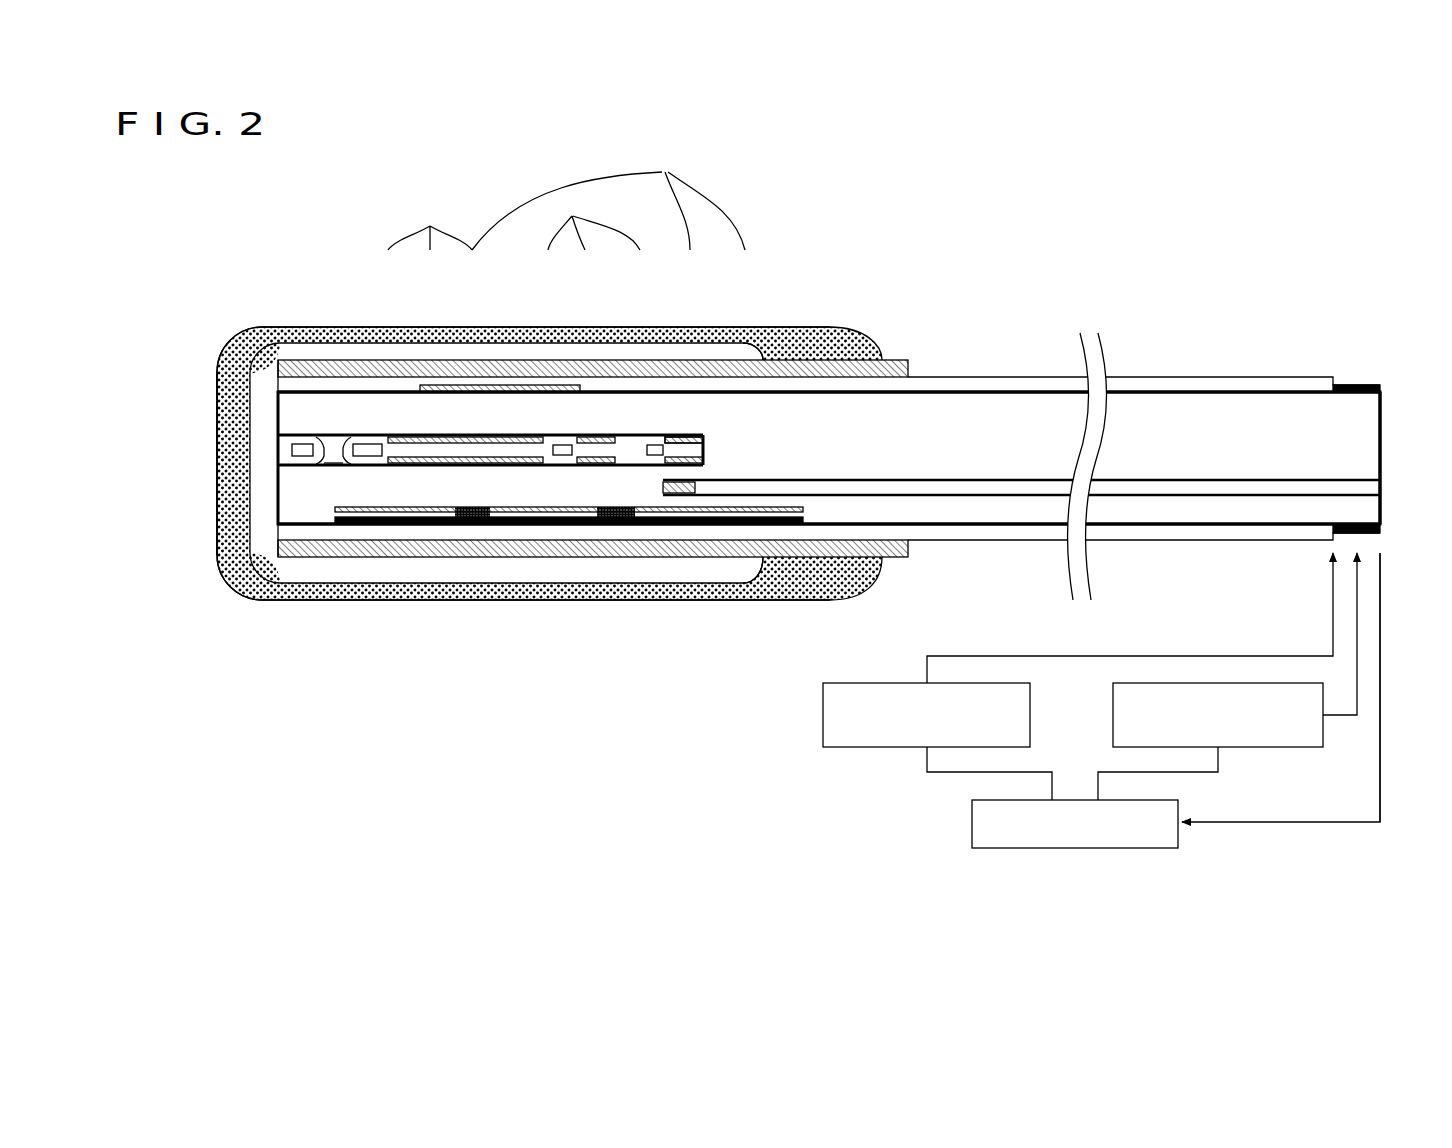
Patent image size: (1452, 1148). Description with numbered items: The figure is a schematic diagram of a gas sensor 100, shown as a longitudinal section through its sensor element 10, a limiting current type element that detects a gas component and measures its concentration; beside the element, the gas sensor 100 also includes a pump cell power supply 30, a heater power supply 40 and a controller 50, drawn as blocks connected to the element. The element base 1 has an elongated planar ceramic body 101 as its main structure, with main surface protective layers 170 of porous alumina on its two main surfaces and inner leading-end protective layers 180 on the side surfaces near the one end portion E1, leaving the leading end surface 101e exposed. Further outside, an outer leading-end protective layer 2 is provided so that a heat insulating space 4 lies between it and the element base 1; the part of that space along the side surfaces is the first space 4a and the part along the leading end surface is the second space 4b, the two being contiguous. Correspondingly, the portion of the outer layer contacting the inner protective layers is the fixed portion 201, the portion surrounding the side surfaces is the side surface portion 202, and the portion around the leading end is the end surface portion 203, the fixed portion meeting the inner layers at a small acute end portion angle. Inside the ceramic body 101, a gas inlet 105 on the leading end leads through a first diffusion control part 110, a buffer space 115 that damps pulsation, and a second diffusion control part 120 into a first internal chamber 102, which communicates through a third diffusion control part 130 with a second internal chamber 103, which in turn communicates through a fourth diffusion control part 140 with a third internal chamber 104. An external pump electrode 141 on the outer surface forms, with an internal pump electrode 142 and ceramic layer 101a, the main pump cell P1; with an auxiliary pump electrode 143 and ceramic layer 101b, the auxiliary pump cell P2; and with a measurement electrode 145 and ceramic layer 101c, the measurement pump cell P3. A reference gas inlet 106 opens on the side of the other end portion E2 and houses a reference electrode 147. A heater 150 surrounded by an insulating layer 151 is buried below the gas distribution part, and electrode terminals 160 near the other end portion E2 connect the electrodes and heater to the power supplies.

The element base 1 is at (940, 358).
The outer leading-end protective layer 2 is at (852, 325).
The heat insulating space 4 is at (297, 573).
The first space 4a is at (516, 358).
The second space 4b is at (268, 510).
The sensor element 10 is at (950, 280).
The pump cell power supply 30 is at (1270, 750).
The heater power supply 40 is at (876, 750).
The controller 50 is at (1075, 850).
The gas sensor 100 is at (725, 752).
The ceramic body 101 is at (1228, 422).
The ceramic layer 101a is at (371, 408).
The ceramic layer 101b is at (585, 412).
The ceramic layer 101c is at (706, 448).
The leading end surface 101e is at (272, 408).
The first internal chamber 102 is at (492, 432).
The second internal chamber 103 is at (628, 432).
The third internal chamber 104 is at (700, 437).
The gas inlet 105 is at (283, 450).
The reference gas inlet 106 is at (1388, 489).
The first diffusion control part 110 is at (326, 440).
The buffer space 115 is at (342, 460).
The second diffusion control part 120 is at (343, 440).
The third diffusion control part 130 is at (546, 440).
The fourth diffusion control part 140 is at (672, 447).
The external pump electrode 141 is at (408, 450).
The internal pump electrode 142 is at (418, 432).
The auxiliary pump electrode 143 is at (624, 455).
The measurement electrode 145 is at (686, 455).
The reference electrode 147 is at (677, 497).
The heater 150 is at (578, 507).
The insulating layer 151 is at (487, 507).
The electrode terminals 160 is at (1358, 388).
The main surface protective layers 170 is at (1015, 385).
The inner leading-end protective layers 180 is at (288, 358).
The fixed portion 201 is at (868, 348).
The side surface portion 202 is at (338, 340).
The end surface portion 203 is at (230, 398).
The one end portion E1 is at (213, 490).
The other end portion E2 is at (1400, 445).
The main pump cell P1 is at (430, 222).
The auxiliary pump cell P2 is at (594, 217).
The measurement pump cell P3 is at (608, 196).